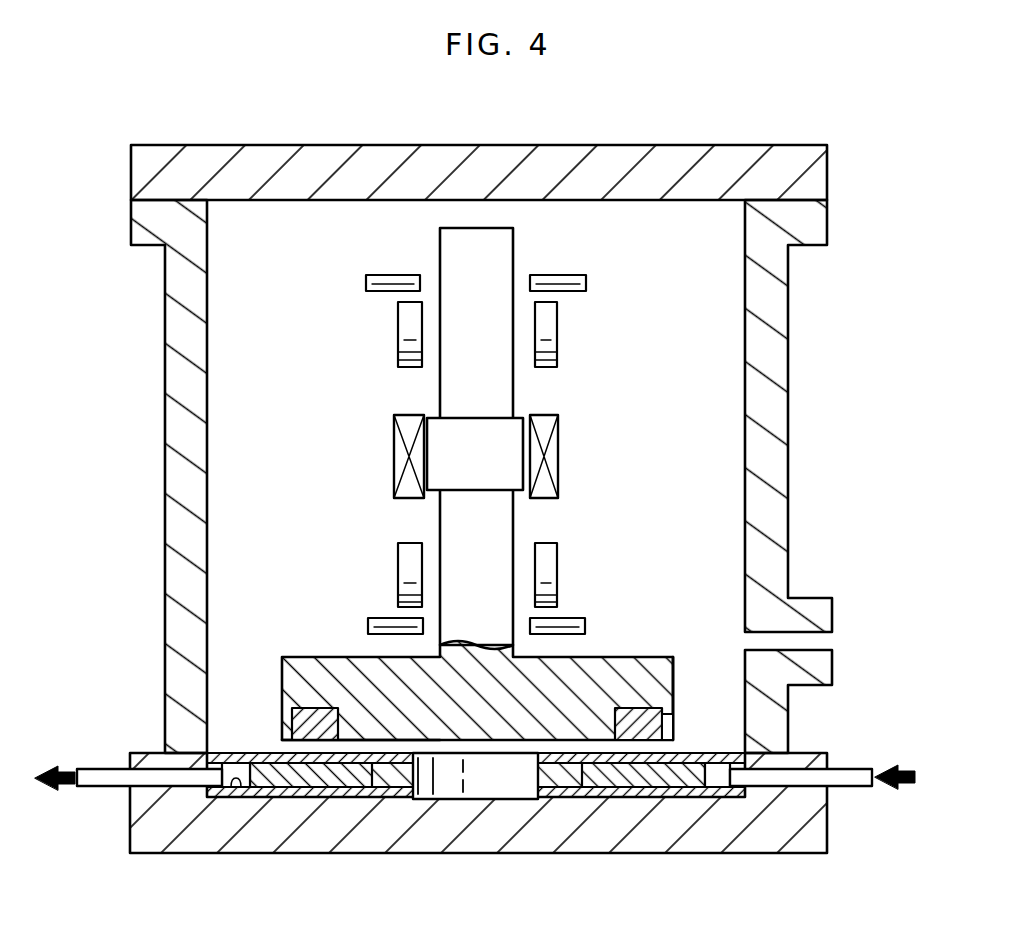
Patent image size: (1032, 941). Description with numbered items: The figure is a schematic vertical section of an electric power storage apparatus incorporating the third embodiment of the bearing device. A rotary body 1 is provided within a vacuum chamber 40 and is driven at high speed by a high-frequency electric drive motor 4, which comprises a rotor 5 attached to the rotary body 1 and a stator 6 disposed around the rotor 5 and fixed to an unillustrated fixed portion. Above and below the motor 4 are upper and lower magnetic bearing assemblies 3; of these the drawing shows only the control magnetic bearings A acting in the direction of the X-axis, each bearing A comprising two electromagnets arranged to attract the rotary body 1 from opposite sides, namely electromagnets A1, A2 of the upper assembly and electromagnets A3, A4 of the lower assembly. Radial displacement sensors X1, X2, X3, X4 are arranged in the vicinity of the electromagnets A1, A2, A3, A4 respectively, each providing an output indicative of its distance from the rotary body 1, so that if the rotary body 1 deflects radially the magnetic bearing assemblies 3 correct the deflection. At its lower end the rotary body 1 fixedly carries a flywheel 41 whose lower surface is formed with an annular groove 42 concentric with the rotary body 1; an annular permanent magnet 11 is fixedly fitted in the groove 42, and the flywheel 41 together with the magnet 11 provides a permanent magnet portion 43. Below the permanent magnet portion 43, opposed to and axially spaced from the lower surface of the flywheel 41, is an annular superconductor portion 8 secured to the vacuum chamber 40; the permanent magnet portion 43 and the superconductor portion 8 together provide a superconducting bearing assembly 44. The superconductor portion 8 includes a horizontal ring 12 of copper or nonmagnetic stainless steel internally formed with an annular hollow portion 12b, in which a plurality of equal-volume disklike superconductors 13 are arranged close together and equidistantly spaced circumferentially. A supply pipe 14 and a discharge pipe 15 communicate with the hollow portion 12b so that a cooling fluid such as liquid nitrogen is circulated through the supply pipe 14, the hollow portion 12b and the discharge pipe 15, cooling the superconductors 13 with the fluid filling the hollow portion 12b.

The rotary body 1 is at (505, 243).
The magnetic bearing assembly 3 is at (605, 450).
The high-frequency electric drive motor 4 is at (487, 432).
The rotor 5 is at (435, 418).
The stator 6 is at (400, 452).
The annular superconductor portion 8 is at (553, 790).
The annular permanent magnet 11 is at (667, 731).
The horizontal ring 12 is at (405, 790).
The annular hollow portion 12b is at (234, 786).
The disklike superconductors 13 is at (328, 790).
The supply pipe 14 is at (855, 777).
The discharge pipe 15 is at (105, 775).
The vacuum chamber 40 is at (788, 353).
The flywheel 41 is at (665, 657).
The annular groove 42 is at (668, 710).
The permanent magnet portion 43 is at (675, 672).
The superconducting bearing assembly 44 is at (259, 732).
The control magnetic bearing A is at (363, 445).
The electromagnet A1 is at (398, 335).
The electromagnet A2 is at (557, 340).
The electromagnet A3 is at (398, 560).
The electromagnet A4 is at (557, 560).
The radial displacement sensor X1 is at (366, 283).
The radial displacement sensor X2 is at (587, 283).
The radial displacement sensor X3 is at (368, 626).
The radial displacement sensor X4 is at (586, 626).